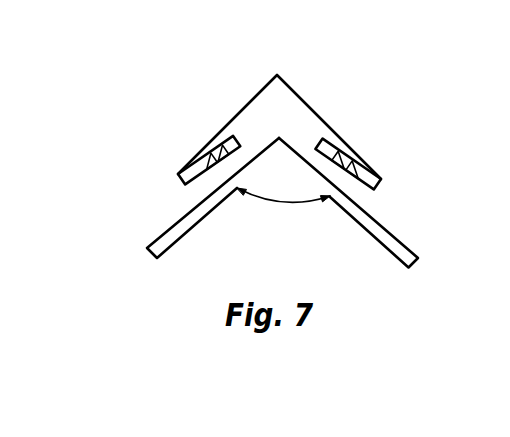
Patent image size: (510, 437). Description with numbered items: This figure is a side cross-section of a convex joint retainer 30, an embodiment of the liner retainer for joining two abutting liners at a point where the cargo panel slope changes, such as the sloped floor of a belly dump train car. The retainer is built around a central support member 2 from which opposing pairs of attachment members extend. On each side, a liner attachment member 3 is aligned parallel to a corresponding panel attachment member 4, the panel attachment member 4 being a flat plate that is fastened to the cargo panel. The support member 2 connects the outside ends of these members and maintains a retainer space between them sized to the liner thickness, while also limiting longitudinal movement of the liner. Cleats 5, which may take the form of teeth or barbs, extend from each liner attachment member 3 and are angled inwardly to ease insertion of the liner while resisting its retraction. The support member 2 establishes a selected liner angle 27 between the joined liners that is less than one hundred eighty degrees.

The support member 2 is at (271, 103).
The liner attachment member 3 is at (203, 152).
The panel attachment member 4 is at (220, 205).
The cleats 5 is at (213, 175).
The liner angle 27 is at (266, 206).
The convex joint retainer 30 is at (180, 221).